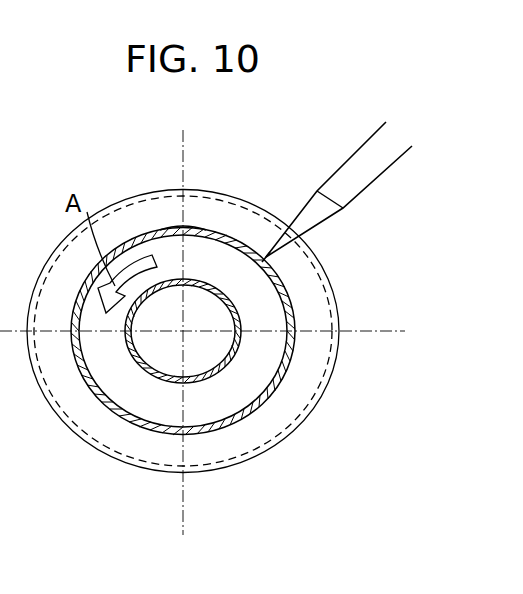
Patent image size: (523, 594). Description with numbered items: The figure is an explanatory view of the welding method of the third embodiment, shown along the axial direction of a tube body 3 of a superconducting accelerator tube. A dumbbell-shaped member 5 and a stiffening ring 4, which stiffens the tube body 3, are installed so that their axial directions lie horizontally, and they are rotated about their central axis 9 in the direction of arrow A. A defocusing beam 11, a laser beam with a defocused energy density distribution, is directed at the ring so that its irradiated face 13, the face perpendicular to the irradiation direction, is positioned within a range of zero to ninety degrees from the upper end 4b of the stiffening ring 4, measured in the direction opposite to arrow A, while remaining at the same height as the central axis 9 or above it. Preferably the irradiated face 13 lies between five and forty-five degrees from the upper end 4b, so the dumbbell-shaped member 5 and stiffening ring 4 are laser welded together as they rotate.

The tube body 3 is at (145, 488).
The stiffening ring 4 is at (100, 408).
The upper end 4b is at (185, 227).
The dumbbell-shaped member 5 is at (255, 464).
The central axis 9 is at (183, 331).
The defocusing beam 11 is at (302, 208).
The irradiated face 13 is at (270, 257).